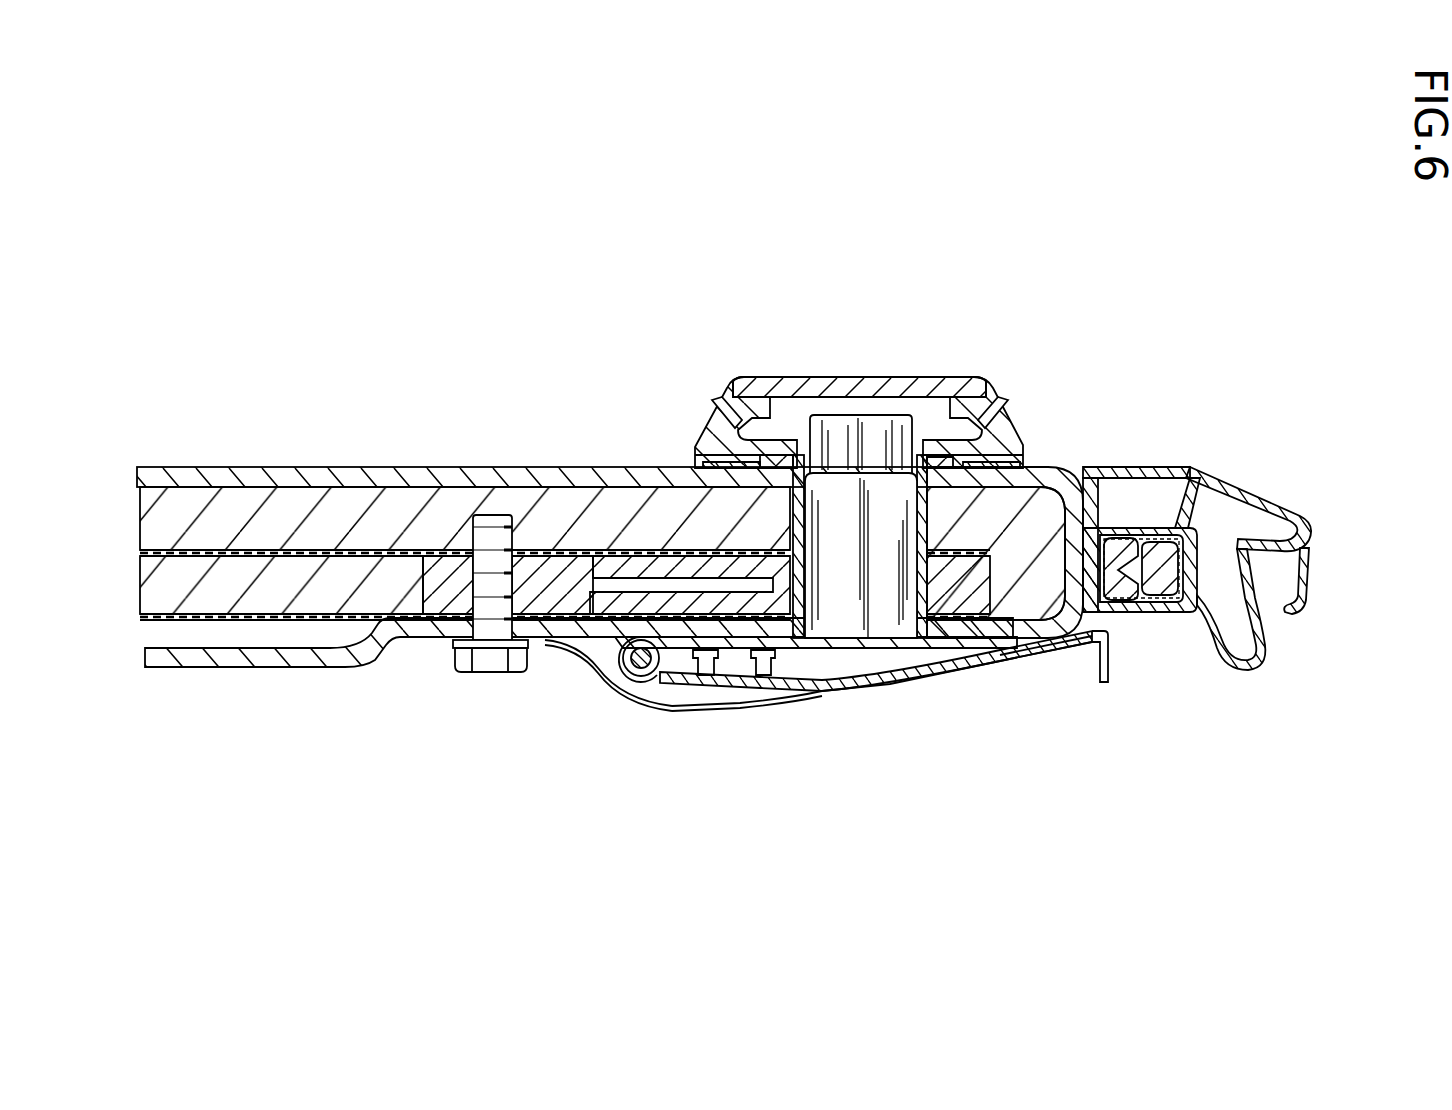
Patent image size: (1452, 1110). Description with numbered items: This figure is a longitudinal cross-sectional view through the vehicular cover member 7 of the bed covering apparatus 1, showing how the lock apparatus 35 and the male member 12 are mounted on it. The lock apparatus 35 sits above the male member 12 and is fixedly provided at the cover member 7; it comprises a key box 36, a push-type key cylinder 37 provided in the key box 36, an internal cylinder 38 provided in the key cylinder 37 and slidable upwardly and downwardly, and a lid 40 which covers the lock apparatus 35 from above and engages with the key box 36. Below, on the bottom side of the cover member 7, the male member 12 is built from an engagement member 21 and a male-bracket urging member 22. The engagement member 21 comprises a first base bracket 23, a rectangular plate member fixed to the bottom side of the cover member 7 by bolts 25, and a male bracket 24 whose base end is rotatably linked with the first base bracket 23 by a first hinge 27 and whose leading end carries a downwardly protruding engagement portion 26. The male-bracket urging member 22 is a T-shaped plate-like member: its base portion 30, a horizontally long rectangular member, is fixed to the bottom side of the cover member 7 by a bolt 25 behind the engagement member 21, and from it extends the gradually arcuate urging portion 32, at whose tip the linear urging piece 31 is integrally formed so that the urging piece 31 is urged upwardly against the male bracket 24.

The bed covering apparatus 1 is at (540, 390).
The cover member 7 is at (403, 466).
The male member 12 is at (890, 720).
The engagement member 21 is at (1037, 668).
The male-bracket urging member 22 is at (727, 712).
The first base bracket 23 is at (898, 648).
The male bracket 24 is at (977, 668).
The bolt 25 is at (495, 668).
The engagement portion 26 is at (1112, 662).
The first hinge 27 is at (642, 678).
The base portion 30 is at (440, 640).
The urging piece 31 is at (818, 690).
The urging portion 32 is at (622, 680).
The lock apparatus 35 is at (968, 362).
The key box 36 is at (1014, 448).
The push-type key cylinder 37 is at (850, 430).
The internal cylinder 38 is at (860, 546).
The lid 40 is at (792, 377).